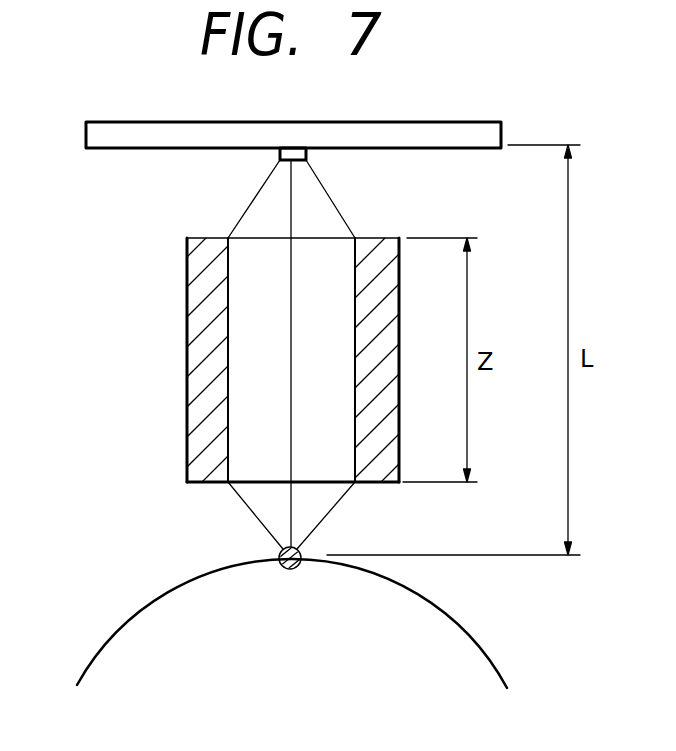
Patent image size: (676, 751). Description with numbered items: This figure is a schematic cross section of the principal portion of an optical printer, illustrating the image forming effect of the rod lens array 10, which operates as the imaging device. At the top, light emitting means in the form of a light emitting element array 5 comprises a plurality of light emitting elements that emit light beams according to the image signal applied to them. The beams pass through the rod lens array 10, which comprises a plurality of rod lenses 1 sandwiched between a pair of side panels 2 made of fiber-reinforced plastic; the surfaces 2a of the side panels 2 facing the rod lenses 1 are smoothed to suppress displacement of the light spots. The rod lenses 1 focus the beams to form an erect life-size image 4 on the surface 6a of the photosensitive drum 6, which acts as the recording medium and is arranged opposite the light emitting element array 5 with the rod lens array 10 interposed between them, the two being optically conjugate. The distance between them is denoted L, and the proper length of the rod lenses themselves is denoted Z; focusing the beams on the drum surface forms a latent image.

The rod lens 1 is at (238, 307).
The side panel 2 is at (193, 377).
The surface of side panel 2a is at (233, 438).
The erect life-size image 4 is at (300, 565).
The light emitting element array 5 is at (280, 150).
The photosensitive drum 6 is at (133, 635).
The object surface 6a is at (183, 578).
The rod lens array 10 is at (156, 233).